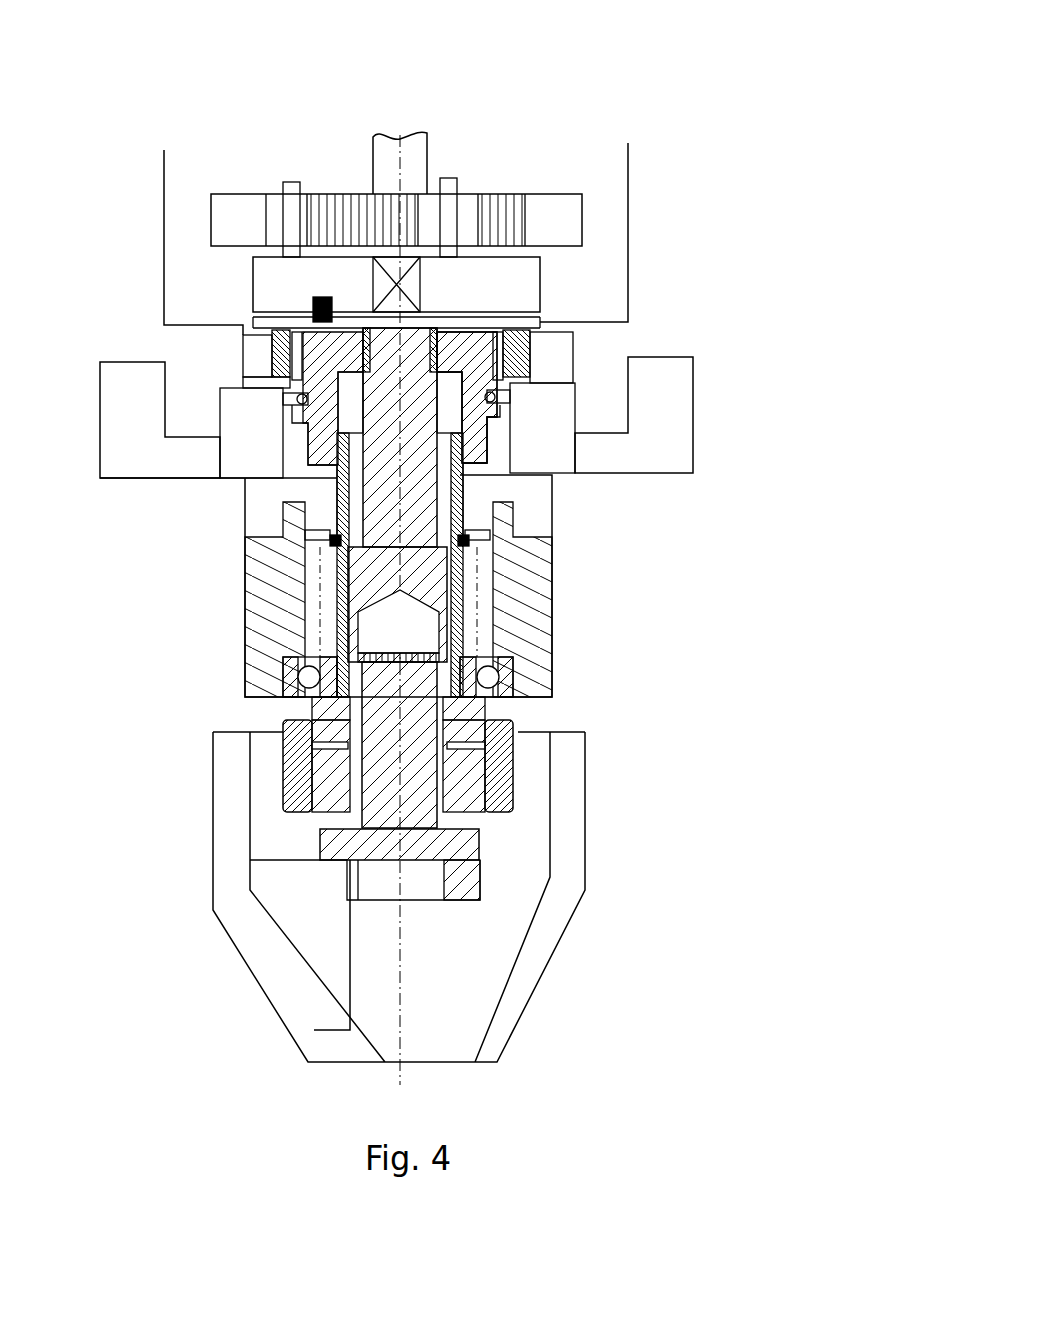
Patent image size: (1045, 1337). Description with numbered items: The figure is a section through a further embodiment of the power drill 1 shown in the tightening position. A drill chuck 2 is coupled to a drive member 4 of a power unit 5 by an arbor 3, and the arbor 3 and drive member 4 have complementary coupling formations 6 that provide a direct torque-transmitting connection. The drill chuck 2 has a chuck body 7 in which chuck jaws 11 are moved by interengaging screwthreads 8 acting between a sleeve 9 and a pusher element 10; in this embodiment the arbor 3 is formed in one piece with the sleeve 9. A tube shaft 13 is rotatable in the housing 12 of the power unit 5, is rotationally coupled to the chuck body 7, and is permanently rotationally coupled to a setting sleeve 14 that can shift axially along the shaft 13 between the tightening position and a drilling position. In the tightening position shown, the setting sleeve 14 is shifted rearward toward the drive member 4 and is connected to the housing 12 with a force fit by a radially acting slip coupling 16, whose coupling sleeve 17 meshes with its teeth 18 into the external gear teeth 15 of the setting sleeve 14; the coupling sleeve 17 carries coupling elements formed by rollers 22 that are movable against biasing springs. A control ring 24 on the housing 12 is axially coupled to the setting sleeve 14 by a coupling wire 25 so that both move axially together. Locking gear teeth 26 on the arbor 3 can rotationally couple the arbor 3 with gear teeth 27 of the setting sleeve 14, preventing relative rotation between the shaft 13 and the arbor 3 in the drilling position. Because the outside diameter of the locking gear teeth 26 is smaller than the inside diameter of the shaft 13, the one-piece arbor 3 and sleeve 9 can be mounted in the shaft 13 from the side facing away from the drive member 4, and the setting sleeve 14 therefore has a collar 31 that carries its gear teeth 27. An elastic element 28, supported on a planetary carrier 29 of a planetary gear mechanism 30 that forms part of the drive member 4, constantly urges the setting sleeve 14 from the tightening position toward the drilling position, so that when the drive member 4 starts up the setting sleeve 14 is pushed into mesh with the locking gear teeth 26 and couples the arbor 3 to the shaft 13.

The power drill 1 is at (235, 125).
The drill chuck 2 is at (580, 983).
The arbor 3 is at (413, 335).
The drive member 4 is at (431, 136).
The power unit 5 is at (712, 467).
The coupling formations 6 is at (385, 268).
The chuck body 7 is at (570, 896).
The screwthreads 8 is at (352, 717).
The sleeve 9 is at (342, 778).
The pusher element 10 is at (335, 845).
The chuck jaws 11 is at (322, 953).
The housing 12 is at (668, 250).
The tube shaft 13 is at (510, 767).
The setting sleeve 14 is at (465, 546).
The external gear teeth 15 is at (490, 358).
The slip coupling 16 is at (272, 390).
The coupling sleeve 17 is at (520, 335).
The teeth 18 is at (467, 397).
The rollers 22 is at (257, 357).
The control ring 24 is at (593, 480).
The coupling wire 25 is at (302, 405).
The locking gear teeth 26 is at (477, 572).
The gear teeth 27 is at (433, 357).
The elastic element 28 is at (318, 318).
The planetary carrier 29 is at (483, 283).
The planetary gear mechanism 30 is at (595, 186).
The collar 31 is at (396, 322).